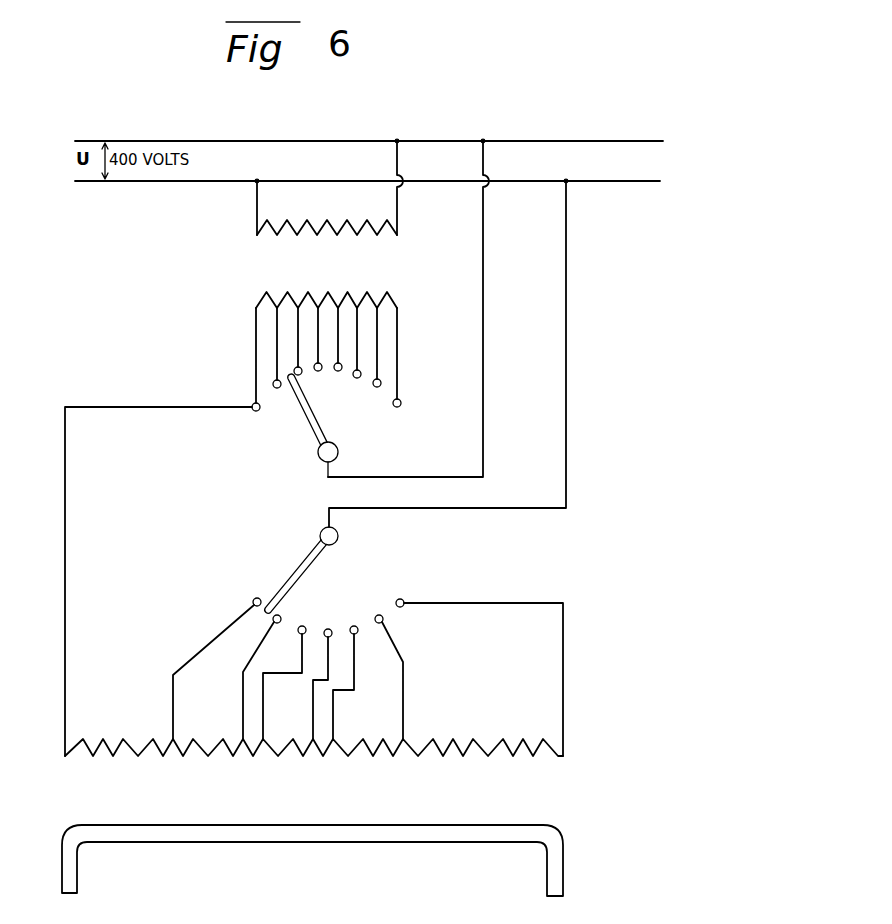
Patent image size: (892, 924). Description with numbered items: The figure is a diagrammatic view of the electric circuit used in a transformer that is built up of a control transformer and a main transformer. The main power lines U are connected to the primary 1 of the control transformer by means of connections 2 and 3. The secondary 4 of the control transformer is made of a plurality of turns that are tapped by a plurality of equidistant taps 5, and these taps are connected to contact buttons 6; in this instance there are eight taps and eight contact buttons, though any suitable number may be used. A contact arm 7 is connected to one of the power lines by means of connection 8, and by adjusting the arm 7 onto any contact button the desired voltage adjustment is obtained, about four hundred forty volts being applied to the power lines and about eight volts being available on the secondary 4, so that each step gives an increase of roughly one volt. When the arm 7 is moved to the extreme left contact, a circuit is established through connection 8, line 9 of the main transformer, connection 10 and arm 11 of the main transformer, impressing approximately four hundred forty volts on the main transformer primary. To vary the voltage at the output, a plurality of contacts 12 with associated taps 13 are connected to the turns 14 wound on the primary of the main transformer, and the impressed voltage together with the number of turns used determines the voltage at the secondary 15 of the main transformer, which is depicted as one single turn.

The primary of the control transformer 1 is at (345, 217).
The connection 2 is at (257, 201).
The connection 3 is at (397, 166).
The secondary of the control transformer 4 is at (323, 295).
The taps 5 is at (254, 355).
The contact buttons 6 is at (355, 377).
The contact arm 7 is at (308, 431).
The connection 8 is at (483, 292).
The line of the main transformer 9 is at (65, 557).
The connection 10 is at (566, 303).
The arm of the main transformer 11 is at (306, 554).
The contacts 12 is at (282, 618).
The taps 13 is at (173, 690).
The turns wound on the primary of the main transformer 14 is at (82, 754).
The secondary of the main transformer 15 is at (165, 825).